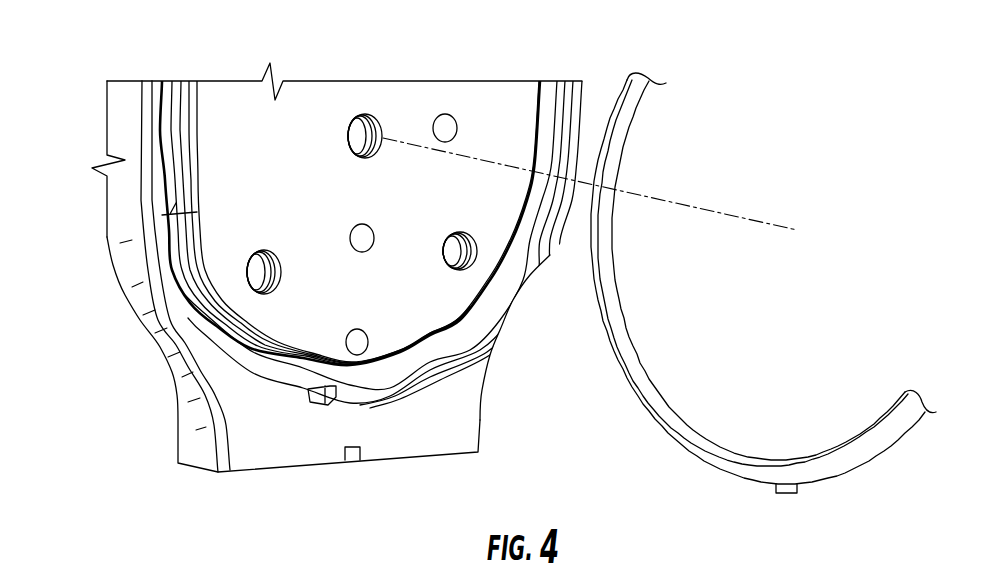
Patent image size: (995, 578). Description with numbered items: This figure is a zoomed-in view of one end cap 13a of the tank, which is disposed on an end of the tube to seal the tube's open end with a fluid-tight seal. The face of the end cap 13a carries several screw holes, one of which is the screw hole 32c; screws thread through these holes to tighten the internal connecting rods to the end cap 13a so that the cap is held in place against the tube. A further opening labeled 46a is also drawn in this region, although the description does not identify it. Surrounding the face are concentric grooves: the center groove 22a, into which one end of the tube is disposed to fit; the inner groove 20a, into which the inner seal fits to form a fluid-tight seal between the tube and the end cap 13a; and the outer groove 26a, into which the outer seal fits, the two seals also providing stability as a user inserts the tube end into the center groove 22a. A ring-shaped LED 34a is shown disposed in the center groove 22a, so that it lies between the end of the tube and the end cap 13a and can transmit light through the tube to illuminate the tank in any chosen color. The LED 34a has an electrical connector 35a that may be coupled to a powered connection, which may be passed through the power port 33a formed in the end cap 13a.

The end cap 13a is at (203, 488).
The inner groove 20a is at (207, 280).
The center groove 22a is at (177, 211).
The outer groove 26a is at (505, 293).
The screw hole 32c is at (358, 82).
The hole bore 46a is at (385, 119).
The power port 33a is at (385, 403).
The LED 34a is at (622, 337).
The electrical connector 35a is at (787, 494).